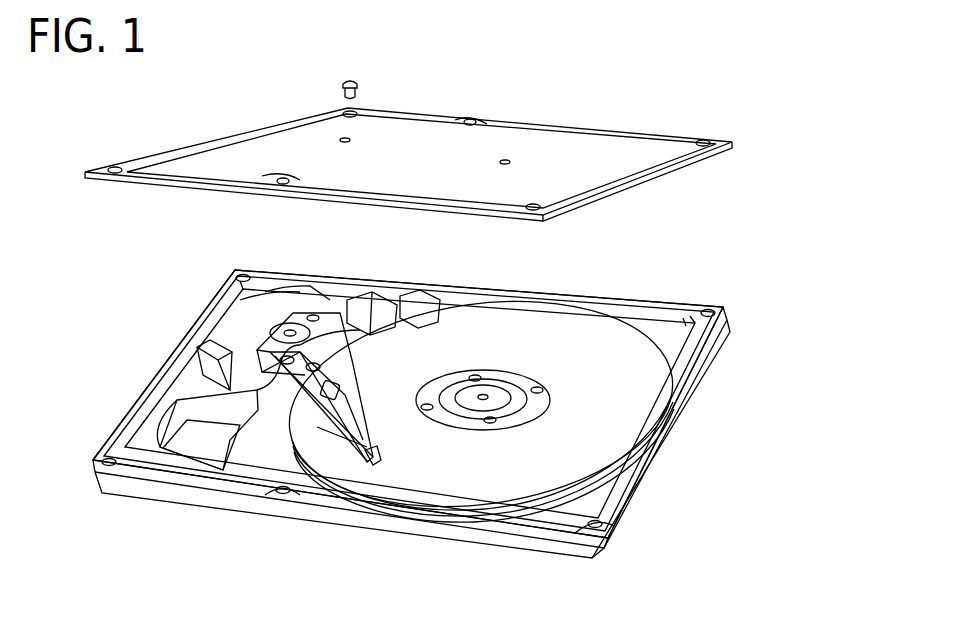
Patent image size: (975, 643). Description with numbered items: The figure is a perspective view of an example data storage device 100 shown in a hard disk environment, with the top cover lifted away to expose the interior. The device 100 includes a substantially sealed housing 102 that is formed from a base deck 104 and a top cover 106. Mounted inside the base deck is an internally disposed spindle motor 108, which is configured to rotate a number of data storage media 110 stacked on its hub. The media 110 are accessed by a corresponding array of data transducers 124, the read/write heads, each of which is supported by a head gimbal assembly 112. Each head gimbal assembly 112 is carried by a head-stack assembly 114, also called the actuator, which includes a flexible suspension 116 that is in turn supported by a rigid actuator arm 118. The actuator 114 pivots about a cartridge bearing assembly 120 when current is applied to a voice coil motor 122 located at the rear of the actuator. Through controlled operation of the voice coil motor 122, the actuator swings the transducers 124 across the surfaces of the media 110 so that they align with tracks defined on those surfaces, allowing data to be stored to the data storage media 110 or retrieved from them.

The data storage device 100 is at (770, 93).
The housing 102 is at (140, 381).
The base deck 104 is at (655, 455).
The top cover 106 is at (619, 130).
The spindle motor 108 is at (494, 384).
The data storage media 110 is at (468, 520).
The head gimbal assembly 112 is at (392, 457).
The head-stack assembly 114 is at (345, 372).
The flexible suspension 116 is at (363, 440).
The actuator arm 118 is at (343, 400).
The cartridge bearing assembly 120 is at (300, 322).
The voice coil motor 122 is at (289, 280).
The transducers 124 is at (372, 466).